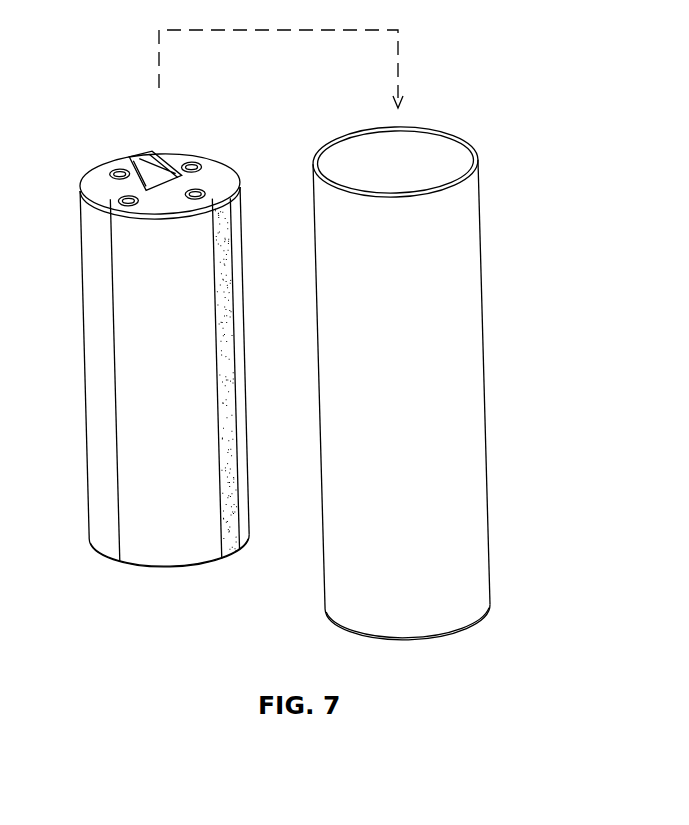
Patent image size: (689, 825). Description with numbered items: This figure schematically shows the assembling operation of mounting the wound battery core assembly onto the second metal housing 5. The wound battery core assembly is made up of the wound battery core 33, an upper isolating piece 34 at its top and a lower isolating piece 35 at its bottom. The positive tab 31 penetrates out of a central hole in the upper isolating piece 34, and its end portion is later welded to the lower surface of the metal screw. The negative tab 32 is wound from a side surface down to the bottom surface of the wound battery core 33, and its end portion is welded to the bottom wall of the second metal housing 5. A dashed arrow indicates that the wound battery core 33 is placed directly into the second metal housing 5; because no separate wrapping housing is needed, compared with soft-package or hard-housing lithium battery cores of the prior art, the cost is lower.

The second metal housing 5 is at (428, 378).
The positive tab 31 is at (160, 180).
The negative tab 32 is at (236, 548).
The wound battery core 33 is at (146, 332).
The upper isolating piece 34 is at (105, 188).
The lower isolating piece 35 is at (128, 564).